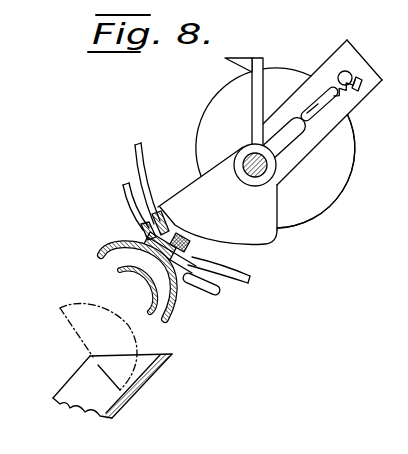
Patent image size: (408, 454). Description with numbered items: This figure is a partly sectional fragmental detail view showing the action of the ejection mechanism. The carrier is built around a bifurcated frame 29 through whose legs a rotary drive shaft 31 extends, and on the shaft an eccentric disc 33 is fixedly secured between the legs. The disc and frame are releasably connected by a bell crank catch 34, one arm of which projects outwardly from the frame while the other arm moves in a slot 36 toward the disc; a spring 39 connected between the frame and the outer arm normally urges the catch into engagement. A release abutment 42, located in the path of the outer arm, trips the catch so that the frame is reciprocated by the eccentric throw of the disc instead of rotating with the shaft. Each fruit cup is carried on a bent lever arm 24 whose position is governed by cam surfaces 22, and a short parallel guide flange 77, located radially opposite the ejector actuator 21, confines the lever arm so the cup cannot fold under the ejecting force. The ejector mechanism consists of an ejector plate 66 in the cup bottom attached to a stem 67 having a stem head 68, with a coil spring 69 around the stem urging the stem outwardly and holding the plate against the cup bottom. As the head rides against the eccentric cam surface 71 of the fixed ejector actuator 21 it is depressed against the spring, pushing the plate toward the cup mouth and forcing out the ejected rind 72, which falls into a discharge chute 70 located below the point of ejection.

The ejector actuator 21 is at (197, 181).
The cam surfaces 22 is at (134, 154).
The lever arm 24 is at (192, 291).
The bifurcated frame 29 is at (343, 53).
The rotary drive shaft 31 is at (265, 170).
The eccentric disc 33 is at (342, 172).
The bell crank catch 34 is at (352, 130).
The slot 36 is at (327, 88).
The spring 39 is at (352, 97).
The release abutment 42 is at (226, 63).
The ejector plate 66 is at (138, 290).
The stem 67 is at (118, 278).
The stem head 68 is at (188, 238).
The coil spring 69 is at (205, 248).
The discharge chute 70 is at (150, 384).
The eccentric cam surface 71 is at (268, 244).
The ejected rind 72 is at (78, 322).
The parallel guide flange 77 is at (129, 203).